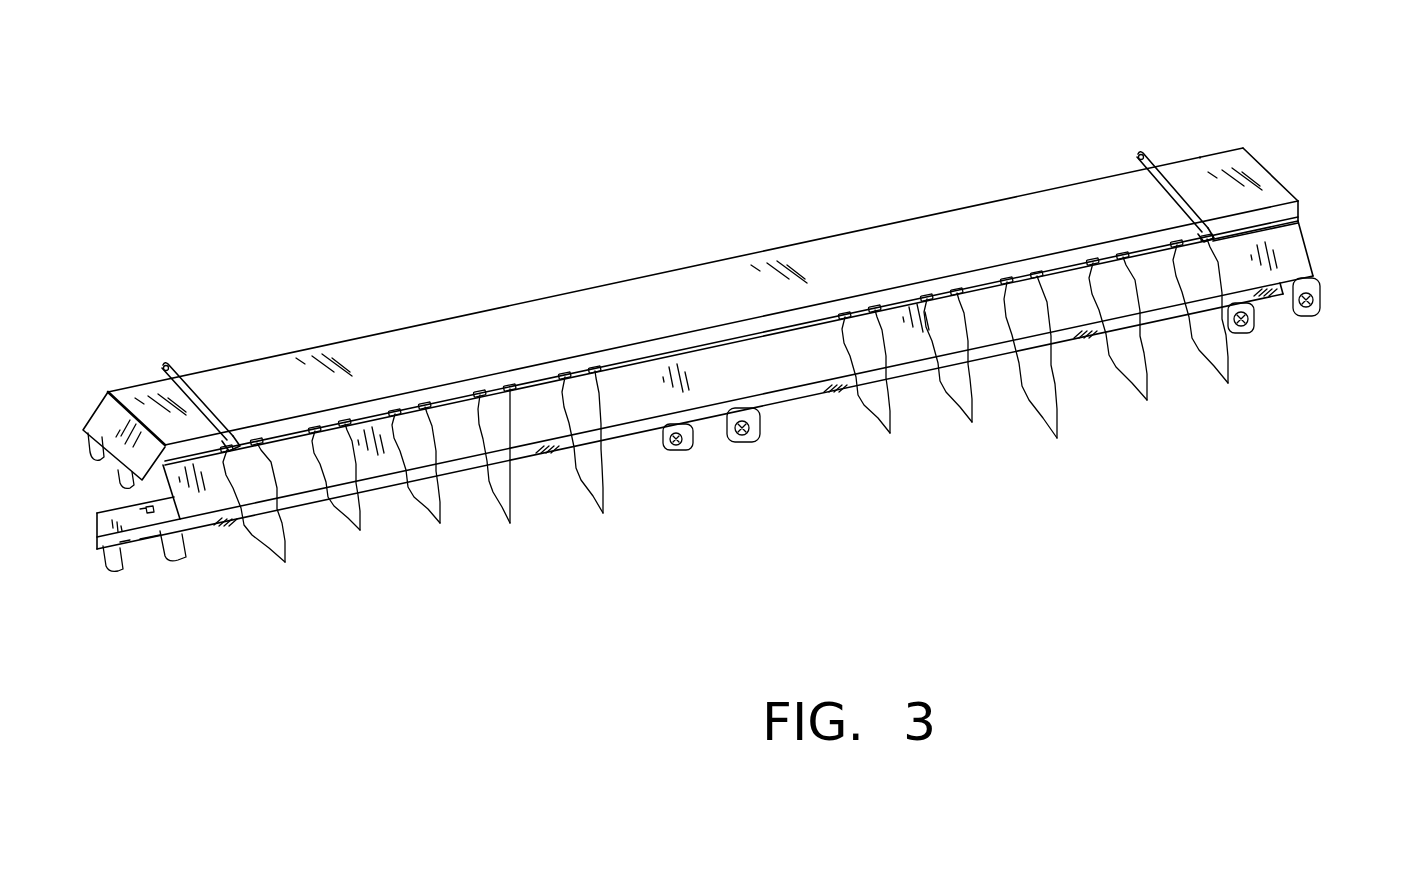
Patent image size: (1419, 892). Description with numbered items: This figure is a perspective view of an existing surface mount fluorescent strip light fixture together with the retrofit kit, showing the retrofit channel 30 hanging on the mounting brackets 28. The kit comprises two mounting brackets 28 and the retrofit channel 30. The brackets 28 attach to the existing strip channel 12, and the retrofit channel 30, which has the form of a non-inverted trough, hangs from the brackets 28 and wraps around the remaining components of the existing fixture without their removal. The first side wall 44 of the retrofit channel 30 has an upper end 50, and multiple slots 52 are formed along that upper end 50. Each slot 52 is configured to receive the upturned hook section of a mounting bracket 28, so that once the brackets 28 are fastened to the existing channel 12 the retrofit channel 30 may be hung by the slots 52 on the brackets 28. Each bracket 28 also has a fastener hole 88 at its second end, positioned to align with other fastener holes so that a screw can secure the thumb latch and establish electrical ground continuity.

The existing strip channel 12 is at (654, 300).
The mounting bracket 28 is at (222, 418).
The retrofit channel 30 is at (1236, 341).
The first side wall 44 is at (1295, 257).
The upper end 50 is at (1306, 215).
The slots 52 is at (732, 415).
The fastener hole 88 is at (169, 361).